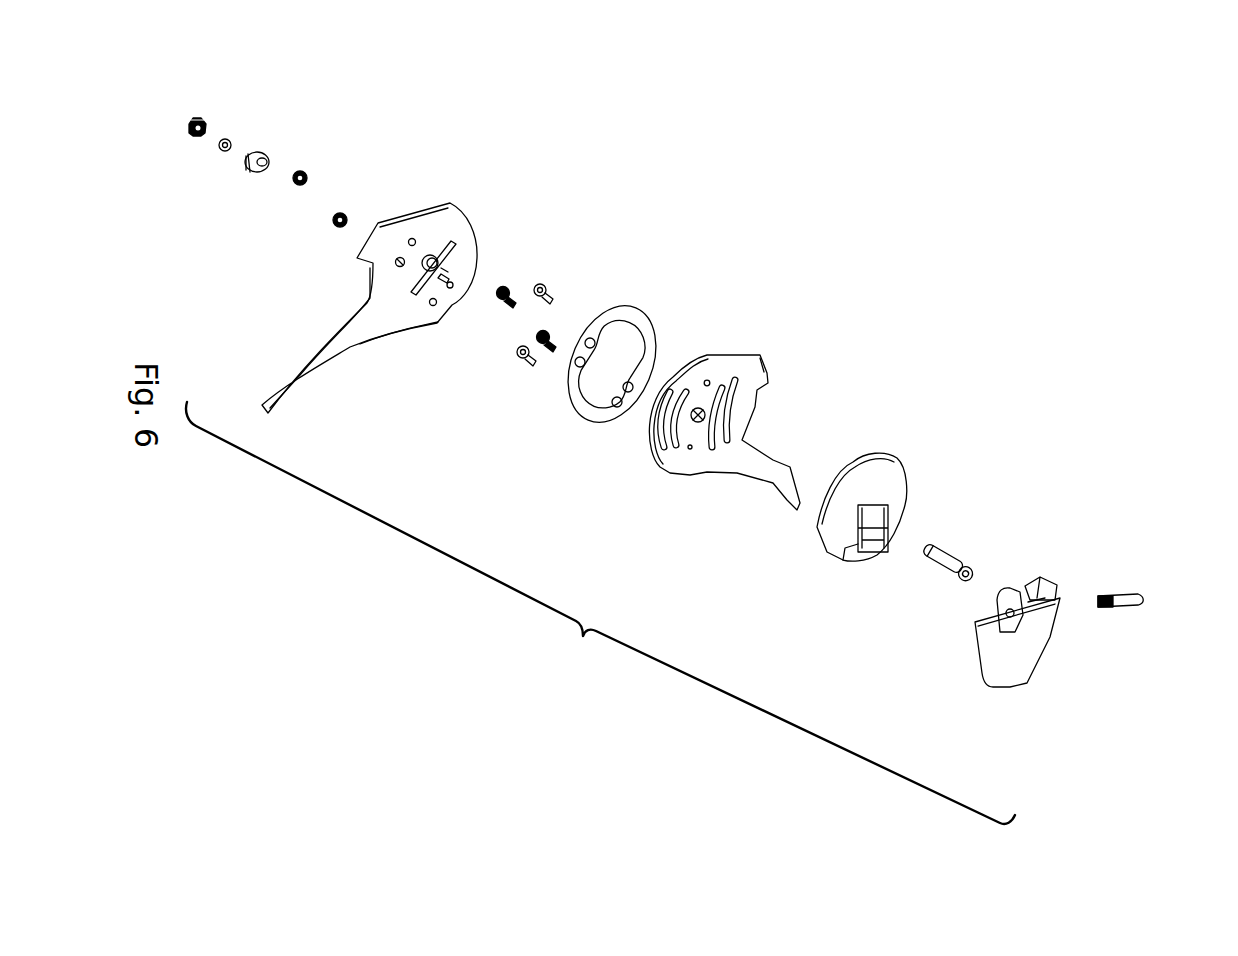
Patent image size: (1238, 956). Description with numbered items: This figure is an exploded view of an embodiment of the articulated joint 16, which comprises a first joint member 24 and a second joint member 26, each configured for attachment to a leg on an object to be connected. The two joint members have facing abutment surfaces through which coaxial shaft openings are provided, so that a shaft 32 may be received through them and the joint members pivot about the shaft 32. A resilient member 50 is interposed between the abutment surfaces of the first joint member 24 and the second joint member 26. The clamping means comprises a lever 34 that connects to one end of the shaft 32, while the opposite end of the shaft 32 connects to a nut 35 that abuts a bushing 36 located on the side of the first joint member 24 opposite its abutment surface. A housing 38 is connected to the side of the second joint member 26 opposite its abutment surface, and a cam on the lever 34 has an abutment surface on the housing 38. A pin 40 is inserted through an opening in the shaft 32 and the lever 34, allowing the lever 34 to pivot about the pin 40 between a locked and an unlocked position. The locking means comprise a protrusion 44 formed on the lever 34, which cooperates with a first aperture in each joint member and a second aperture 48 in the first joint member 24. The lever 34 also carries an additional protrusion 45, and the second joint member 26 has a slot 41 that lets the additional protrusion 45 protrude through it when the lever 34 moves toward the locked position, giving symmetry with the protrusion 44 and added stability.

The articulated joint 16 is at (806, 188).
The first joint member 24 is at (433, 203).
The second joint member 26 is at (768, 376).
The shaft 32 is at (938, 555).
The lever 34 is at (1017, 660).
The nut 35 is at (198, 138).
The bushing 36 is at (245, 173).
The housing 38 is at (840, 518).
The pin 40 is at (1140, 595).
The slot 41 is at (667, 448).
The protrusion 44 is at (1043, 577).
The additional protrusion 45 is at (1007, 590).
The second aperture 48 is at (445, 297).
The resilient member 50 is at (581, 417).